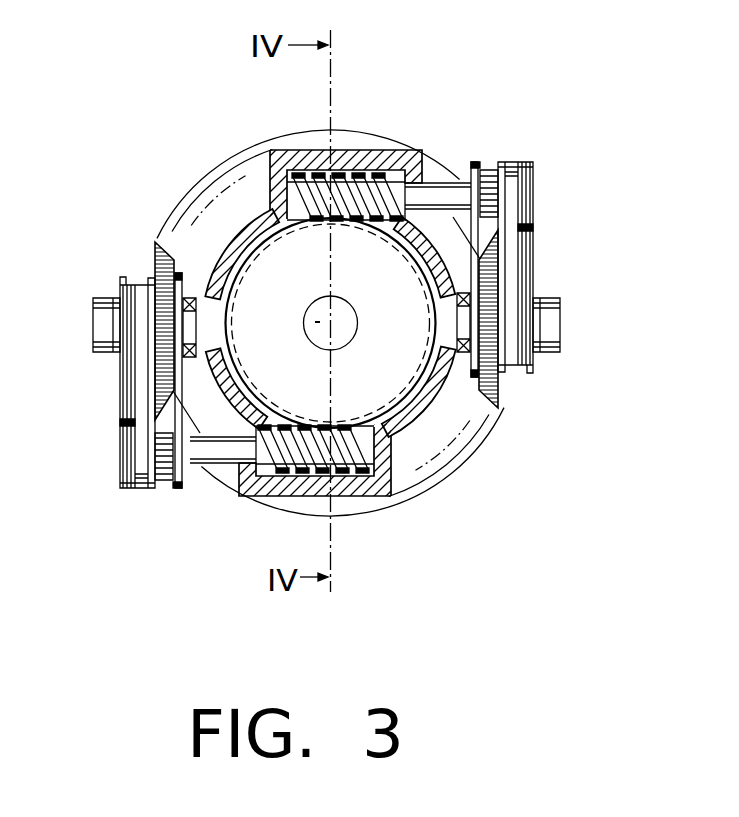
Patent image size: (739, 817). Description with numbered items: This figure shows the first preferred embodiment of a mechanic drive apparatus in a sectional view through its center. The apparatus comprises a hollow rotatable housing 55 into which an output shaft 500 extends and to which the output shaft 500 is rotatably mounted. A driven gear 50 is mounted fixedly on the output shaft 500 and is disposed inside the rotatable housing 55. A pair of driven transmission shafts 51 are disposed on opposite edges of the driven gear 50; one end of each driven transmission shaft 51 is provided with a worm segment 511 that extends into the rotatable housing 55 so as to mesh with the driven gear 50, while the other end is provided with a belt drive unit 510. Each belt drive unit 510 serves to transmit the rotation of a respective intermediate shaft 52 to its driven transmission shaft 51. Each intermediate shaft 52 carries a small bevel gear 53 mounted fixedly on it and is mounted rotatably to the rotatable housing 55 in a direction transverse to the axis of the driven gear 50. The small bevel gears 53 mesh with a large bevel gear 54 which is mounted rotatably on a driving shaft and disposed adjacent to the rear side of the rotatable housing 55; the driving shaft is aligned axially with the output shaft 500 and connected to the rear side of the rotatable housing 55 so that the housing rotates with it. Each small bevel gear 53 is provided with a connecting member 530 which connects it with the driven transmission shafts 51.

The driven gear 50 is at (404, 421).
The driven transmission shaft 51 is at (446, 185).
The intermediate shaft 52 is at (559, 325).
The small bevel gear 53 is at (484, 393).
The large bevel gear 54 is at (414, 480).
The rotatable housing 55 is at (281, 152).
The output shaft 500 is at (318, 320).
The belt drive unit 510 is at (538, 158).
The worm segment 511 is at (370, 182).
The connecting member 530 is at (480, 160).